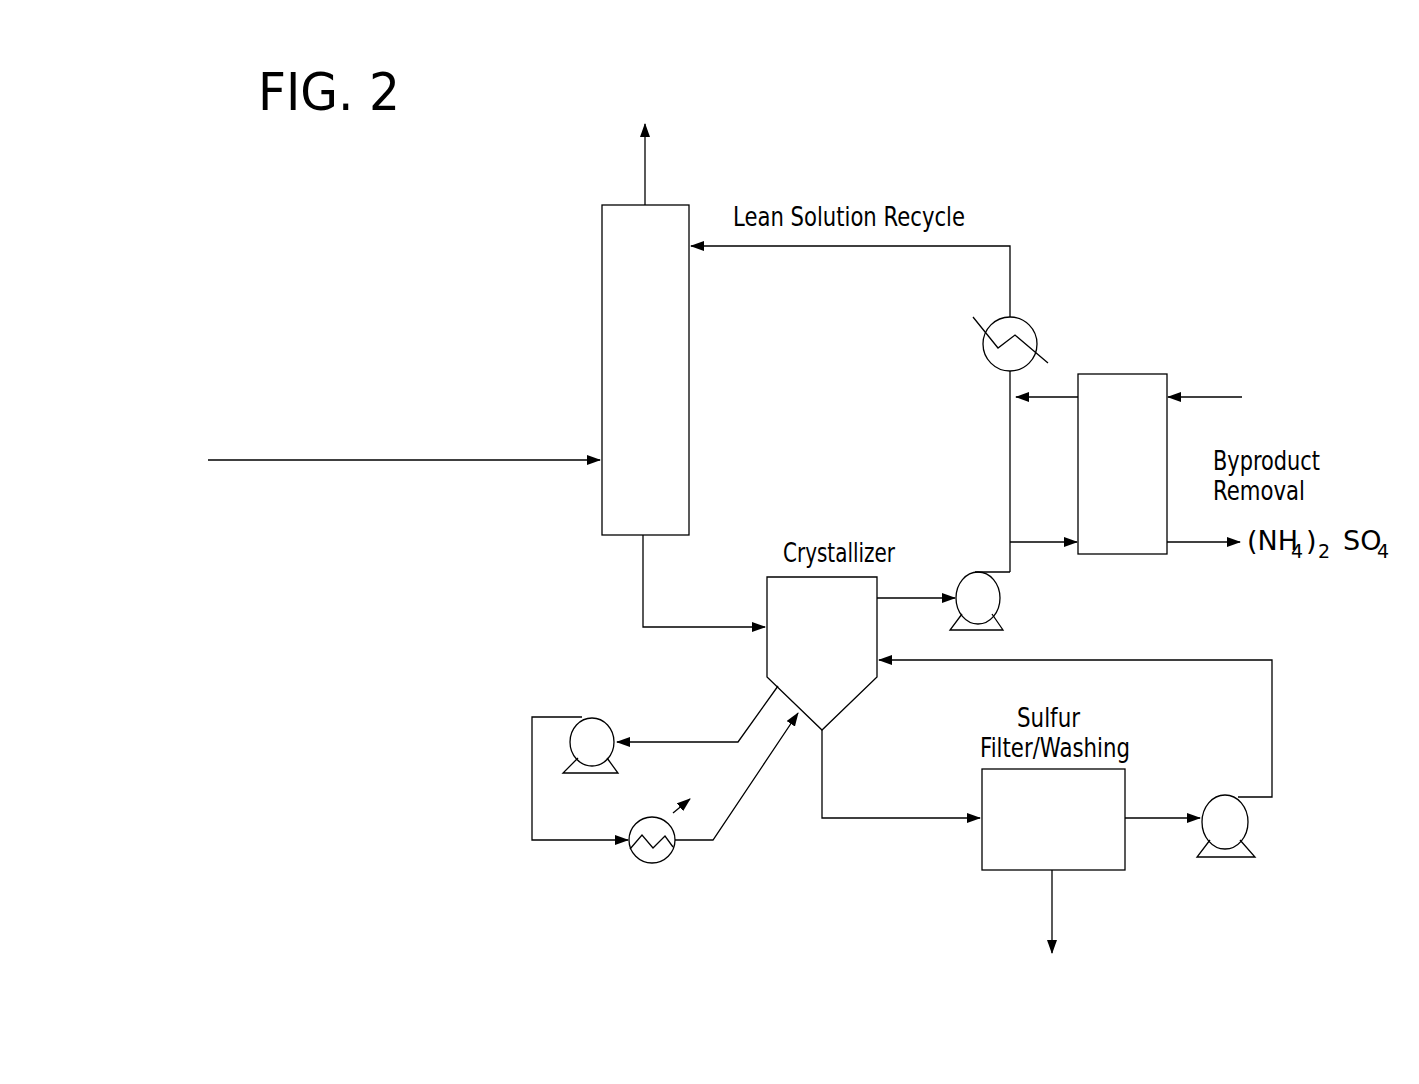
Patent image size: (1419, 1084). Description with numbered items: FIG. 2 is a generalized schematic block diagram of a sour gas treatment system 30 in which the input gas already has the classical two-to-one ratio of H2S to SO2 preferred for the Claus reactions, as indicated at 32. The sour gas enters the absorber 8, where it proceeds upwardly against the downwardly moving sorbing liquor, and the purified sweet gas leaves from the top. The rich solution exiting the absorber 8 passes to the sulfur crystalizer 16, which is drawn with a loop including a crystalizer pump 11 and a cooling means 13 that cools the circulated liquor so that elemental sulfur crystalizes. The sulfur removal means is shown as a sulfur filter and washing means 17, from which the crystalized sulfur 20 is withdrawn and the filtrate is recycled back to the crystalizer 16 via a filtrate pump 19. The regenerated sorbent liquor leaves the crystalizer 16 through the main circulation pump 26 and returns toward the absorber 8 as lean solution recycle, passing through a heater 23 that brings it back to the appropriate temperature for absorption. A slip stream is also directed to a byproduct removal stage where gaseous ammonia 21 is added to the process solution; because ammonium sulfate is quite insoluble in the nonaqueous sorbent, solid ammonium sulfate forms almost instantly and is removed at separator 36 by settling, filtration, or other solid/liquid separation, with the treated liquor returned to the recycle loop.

The absorber 8 is at (597, 329).
The H2S to SO2 ratio 32 is at (360, 508).
The system 30 is at (575, 547).
The heater 23 is at (973, 348).
The separator 36 is at (1077, 467).
The gaseous ammonia 21 is at (1205, 391).
The pump 26 is at (972, 570).
The sulfur crystalizer 16 is at (765, 655).
The crystalizer pump 11 is at (582, 738).
The cooling means 13 is at (628, 850).
The sulfur filter and washing means 17 is at (980, 850).
The crystalized sulfur 20 is at (1050, 916).
The filtrate pump 19 is at (1252, 825).